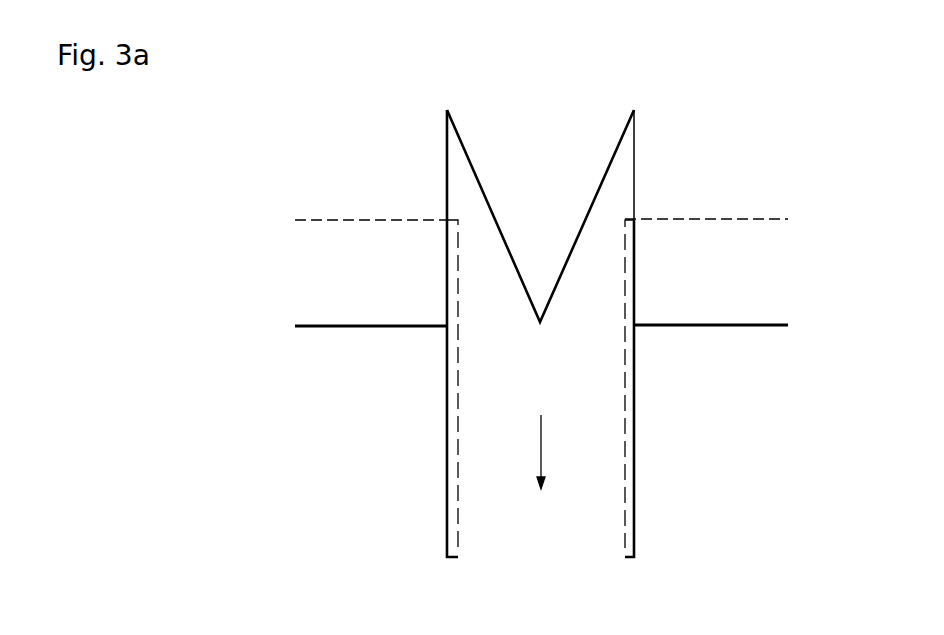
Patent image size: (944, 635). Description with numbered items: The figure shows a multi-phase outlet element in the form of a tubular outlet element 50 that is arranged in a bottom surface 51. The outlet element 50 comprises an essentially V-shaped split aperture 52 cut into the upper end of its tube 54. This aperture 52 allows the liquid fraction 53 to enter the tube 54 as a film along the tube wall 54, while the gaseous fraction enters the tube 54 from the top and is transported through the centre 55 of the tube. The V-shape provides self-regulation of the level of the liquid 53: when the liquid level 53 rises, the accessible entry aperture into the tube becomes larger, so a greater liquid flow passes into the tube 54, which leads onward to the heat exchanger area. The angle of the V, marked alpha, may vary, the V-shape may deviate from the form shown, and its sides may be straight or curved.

The tubular outlet element 50 is at (406, 87).
The bottom surface 51 is at (297, 326).
The V-shaped split aperture 52 is at (587, 213).
The liquid fraction 53 is at (327, 213).
The tube 54 is at (447, 480).
The centre of the tube 55 is at (557, 515).